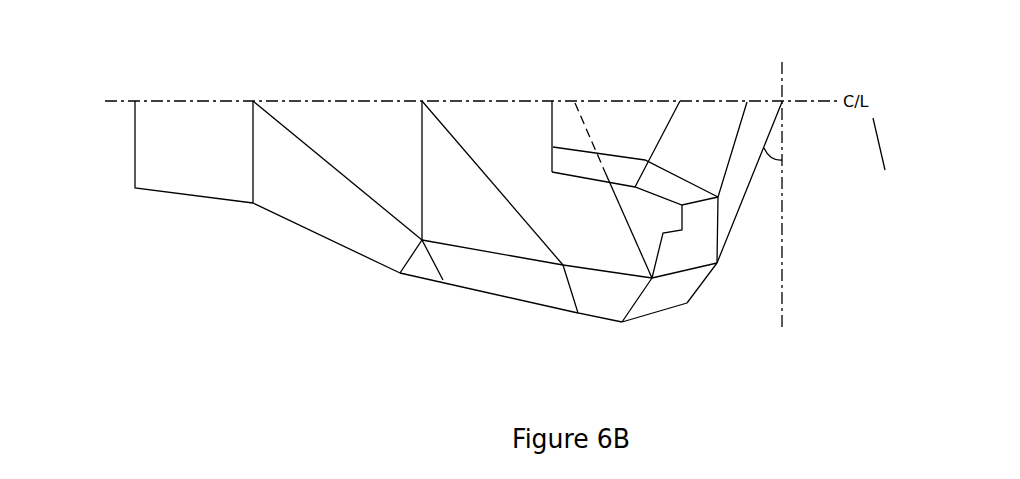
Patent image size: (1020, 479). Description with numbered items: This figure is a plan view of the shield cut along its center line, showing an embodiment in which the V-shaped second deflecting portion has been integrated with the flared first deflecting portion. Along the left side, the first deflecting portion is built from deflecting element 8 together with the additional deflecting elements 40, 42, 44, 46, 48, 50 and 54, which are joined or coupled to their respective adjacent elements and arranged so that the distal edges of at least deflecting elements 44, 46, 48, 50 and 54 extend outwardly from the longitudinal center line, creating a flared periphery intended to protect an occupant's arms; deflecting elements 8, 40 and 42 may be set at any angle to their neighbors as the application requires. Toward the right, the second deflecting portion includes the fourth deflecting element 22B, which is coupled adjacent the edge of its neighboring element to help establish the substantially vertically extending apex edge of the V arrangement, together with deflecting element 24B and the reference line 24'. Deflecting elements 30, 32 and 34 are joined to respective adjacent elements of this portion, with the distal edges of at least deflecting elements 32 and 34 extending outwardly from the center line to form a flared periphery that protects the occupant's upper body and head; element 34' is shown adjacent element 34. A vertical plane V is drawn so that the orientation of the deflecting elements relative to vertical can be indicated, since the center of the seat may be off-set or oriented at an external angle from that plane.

The deflecting element 8 is at (507, 120).
The fourth deflecting element 22B is at (735, 187).
The inner wall reference line 24' is at (613, 154).
The inner wall portion 24B is at (728, 117).
The deflecting element 30 is at (665, 300).
The deflecting element 32 is at (692, 252).
The deflecting element 34 is at (635, 189).
The rib upper portion 34' is at (635, 161).
The deflecting element 40 is at (438, 155).
The deflecting element 42 is at (360, 123).
The deflecting element 44 is at (600, 302).
The deflecting element 46 is at (493, 283).
The deflecting element 48 is at (418, 267).
The deflecting element 50 is at (327, 218).
The deflecting element 54 is at (198, 125).
The vertical plane V is at (780, 305).